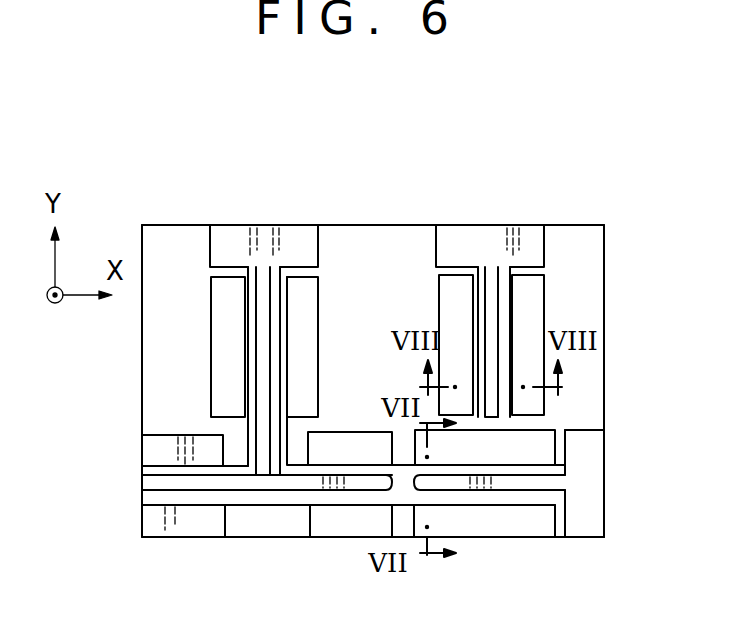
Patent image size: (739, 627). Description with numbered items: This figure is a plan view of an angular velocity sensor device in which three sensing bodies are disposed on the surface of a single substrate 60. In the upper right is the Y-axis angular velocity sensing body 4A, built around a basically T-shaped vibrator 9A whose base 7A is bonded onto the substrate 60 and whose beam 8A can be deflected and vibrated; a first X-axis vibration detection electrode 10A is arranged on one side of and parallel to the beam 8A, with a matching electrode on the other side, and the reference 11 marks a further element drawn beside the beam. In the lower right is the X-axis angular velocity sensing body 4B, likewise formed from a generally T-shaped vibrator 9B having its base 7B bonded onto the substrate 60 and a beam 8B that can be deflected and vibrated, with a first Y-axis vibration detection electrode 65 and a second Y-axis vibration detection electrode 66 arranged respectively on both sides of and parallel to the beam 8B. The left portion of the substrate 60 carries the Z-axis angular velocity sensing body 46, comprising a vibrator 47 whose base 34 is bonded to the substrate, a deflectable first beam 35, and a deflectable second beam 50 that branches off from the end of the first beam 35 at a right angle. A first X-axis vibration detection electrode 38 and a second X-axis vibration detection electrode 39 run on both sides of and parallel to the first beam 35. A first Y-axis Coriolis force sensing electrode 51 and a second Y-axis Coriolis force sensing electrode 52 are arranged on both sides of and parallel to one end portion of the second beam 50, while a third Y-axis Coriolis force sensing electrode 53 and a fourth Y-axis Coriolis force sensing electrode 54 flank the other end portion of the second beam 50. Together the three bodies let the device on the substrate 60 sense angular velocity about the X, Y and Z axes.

The Y-axis angular velocity sensing body 4A is at (572, 310).
The X-axis angular velocity sensing body 4B is at (540, 525).
The base 7A is at (463, 245).
The base 7B is at (592, 484).
The beam 8A is at (491, 280).
The beam 8B is at (518, 480).
The T-shaped vibrator 9A is at (503, 298).
The T-shaped vibrator 9B is at (468, 480).
The first X-axis vibration detection electrode 10A is at (548, 298).
The semiconductor layer 11 is at (440, 297).
The base 34 is at (262, 350).
The first beam 35 is at (273, 352).
The first X-axis vibration detection electrode 38 is at (302, 308).
The second X-axis vibration detection electrode 39 is at (212, 292).
The Z-axis angular velocity sensing body 46 is at (225, 225).
The vibrator 47 is at (262, 437).
The second beam 50 is at (155, 485).
The first Y-axis Coriolis force sensing electrode 51 is at (168, 453).
The second Y-axis Coriolis force sensing electrode 52 is at (155, 517).
The third Y-axis Coriolis force sensing electrode 53 is at (347, 440).
The fourth Y-axis Coriolis force sensing electrode 54 is at (340, 518).
The substrate 60 is at (573, 235).
The first Y-axis vibration detection electrode 65 is at (528, 438).
The second Y-axis vibration detection electrode 66 is at (515, 527).